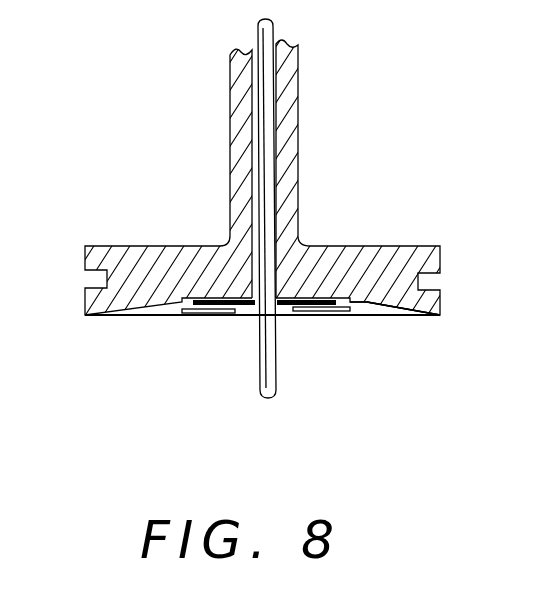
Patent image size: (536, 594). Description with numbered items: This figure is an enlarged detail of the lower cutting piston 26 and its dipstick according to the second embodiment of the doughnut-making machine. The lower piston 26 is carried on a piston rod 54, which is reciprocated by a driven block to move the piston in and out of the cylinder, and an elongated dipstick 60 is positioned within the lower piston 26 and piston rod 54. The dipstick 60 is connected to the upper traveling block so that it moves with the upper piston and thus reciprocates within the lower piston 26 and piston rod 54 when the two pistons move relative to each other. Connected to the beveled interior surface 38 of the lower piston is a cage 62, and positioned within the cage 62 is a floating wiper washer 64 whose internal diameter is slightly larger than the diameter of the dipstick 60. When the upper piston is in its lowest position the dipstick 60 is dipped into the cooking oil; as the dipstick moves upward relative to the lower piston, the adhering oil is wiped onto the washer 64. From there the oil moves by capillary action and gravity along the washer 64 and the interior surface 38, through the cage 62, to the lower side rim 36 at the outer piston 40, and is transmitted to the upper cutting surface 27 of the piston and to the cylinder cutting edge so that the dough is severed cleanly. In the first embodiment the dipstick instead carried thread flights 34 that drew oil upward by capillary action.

The housing 26 is at (85, 264).
The housing portion 27 is at (440, 248).
The direction of flow arrow 34 is at (329, 351).
The diaphragm 36 is at (360, 318).
The chamber 38 is at (383, 315).
The tapered surface 40 is at (440, 315).
The tubular member 54 is at (298, 128).
The rod 60 is at (276, 394).
The piezoelectric plate 62 is at (172, 316).
The electrode 64 is at (243, 310).